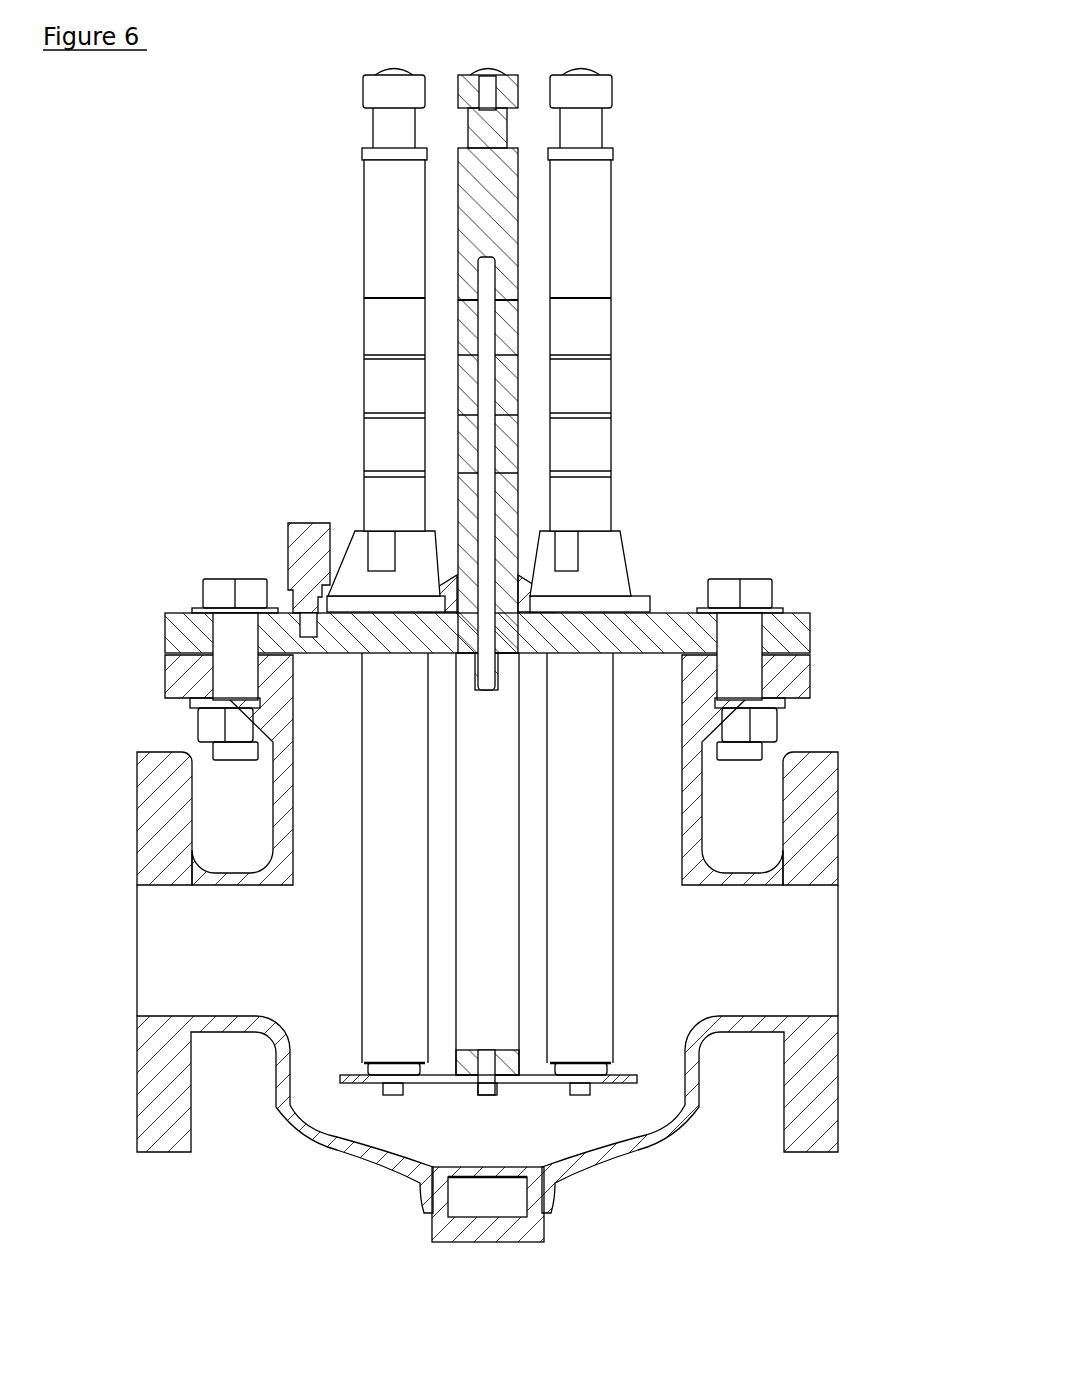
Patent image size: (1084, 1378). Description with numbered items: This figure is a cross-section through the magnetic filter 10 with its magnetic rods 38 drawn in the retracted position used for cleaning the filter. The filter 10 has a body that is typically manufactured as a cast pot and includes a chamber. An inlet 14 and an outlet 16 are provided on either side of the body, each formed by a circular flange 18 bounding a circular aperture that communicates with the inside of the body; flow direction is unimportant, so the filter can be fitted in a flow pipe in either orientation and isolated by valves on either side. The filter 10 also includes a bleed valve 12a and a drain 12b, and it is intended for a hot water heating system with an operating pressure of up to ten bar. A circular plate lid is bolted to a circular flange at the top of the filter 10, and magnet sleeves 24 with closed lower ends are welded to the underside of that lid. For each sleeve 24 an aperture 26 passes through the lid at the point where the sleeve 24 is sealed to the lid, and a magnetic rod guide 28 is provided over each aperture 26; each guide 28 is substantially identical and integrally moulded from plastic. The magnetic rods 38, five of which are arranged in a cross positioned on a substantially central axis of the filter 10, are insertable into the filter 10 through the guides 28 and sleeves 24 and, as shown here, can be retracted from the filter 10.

The magnetic filter 10 is at (150, 205).
The bleed valve 12a is at (312, 638).
The drain 12b is at (473, 1197).
The inlet 14 is at (805, 948).
The outlet 16 is at (177, 955).
The circular flange 18 is at (173, 772).
The magnet sleeve 24 is at (395, 1035).
The aperture 26 is at (520, 633).
The magnetic rod guide 28 is at (358, 542).
The magnetic rod 38 is at (363, 183).